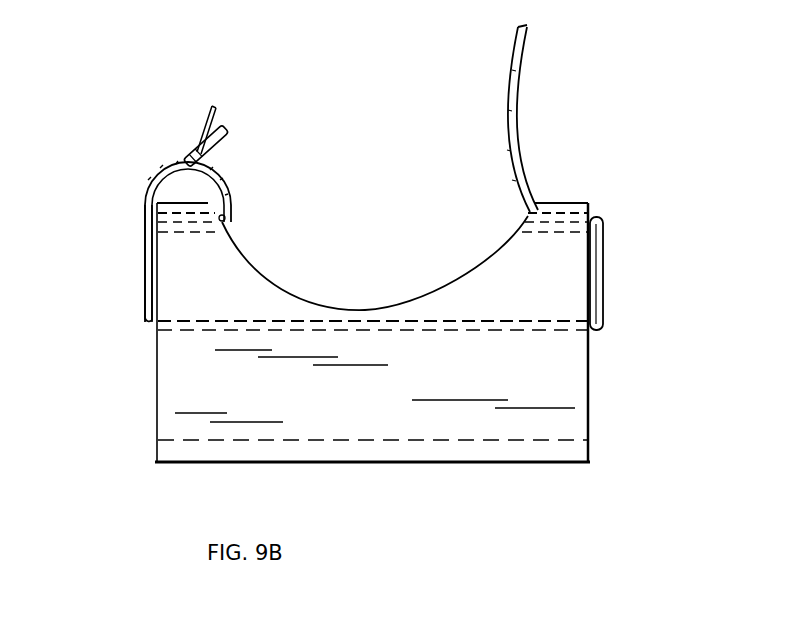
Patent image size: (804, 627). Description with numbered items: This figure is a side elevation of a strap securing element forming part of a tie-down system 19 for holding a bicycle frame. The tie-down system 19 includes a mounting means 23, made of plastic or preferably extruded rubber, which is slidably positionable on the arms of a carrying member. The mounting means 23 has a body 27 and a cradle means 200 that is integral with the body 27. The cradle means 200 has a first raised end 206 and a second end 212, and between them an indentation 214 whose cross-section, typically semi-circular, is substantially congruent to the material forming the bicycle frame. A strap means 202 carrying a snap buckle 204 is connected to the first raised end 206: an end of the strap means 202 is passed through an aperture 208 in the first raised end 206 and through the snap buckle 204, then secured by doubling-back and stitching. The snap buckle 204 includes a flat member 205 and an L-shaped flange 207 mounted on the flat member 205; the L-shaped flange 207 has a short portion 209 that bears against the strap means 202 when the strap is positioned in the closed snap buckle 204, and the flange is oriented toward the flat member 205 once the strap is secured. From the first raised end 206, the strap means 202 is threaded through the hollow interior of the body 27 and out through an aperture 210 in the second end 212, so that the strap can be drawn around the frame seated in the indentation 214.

The tie-down system 19 is at (162, 58).
The mounting means 23 is at (556, 492).
The body 27 is at (575, 378).
The cradle means 200 is at (390, 185).
The strap means 202 is at (145, 280).
The snap buckle 204 is at (240, 158).
The flat member 205 is at (224, 136).
The first raised end 206 is at (160, 256).
The L-shaped flange 207 is at (198, 120).
The aperture 208 is at (228, 218).
The short portion 209 is at (214, 108).
The aperture 210 is at (604, 223).
The second end 212 is at (612, 183).
The indentation 214 is at (350, 306).